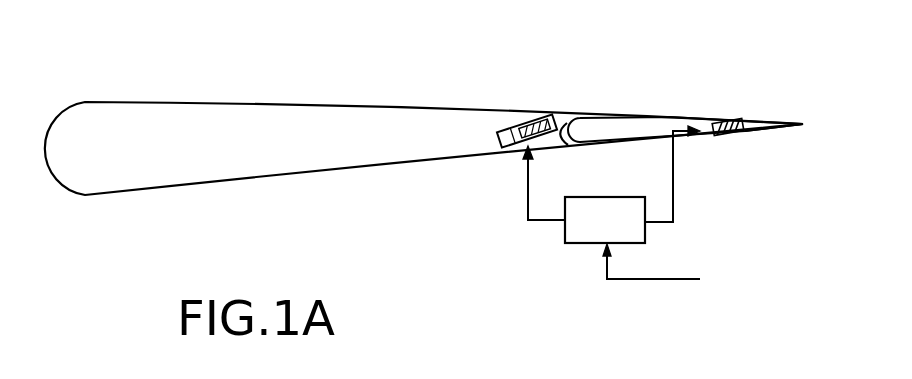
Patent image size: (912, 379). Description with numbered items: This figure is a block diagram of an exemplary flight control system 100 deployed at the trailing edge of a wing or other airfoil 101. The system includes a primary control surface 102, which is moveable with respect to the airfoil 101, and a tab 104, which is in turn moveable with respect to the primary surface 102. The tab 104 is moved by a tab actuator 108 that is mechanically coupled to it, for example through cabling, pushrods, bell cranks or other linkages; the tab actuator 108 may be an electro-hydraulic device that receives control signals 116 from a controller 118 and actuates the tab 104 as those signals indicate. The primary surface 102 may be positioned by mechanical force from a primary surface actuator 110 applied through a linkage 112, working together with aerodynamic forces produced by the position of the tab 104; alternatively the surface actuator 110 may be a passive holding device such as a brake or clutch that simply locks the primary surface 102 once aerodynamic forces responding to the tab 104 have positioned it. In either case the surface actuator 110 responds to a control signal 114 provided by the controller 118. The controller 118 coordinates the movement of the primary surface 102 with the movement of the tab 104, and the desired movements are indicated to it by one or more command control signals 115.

The flight control system 100 is at (424, 108).
The airfoil 101 is at (119, 128).
The primary control surface 102 is at (685, 131).
The tab 104 is at (773, 130).
The tab actuator 108 is at (719, 137).
The primary surface actuator 110 is at (515, 125).
The linkage 112 is at (568, 146).
The control signal 114 is at (530, 221).
The control signals 115 is at (652, 280).
The control signals 116 is at (668, 222).
The controller 118 is at (591, 238).